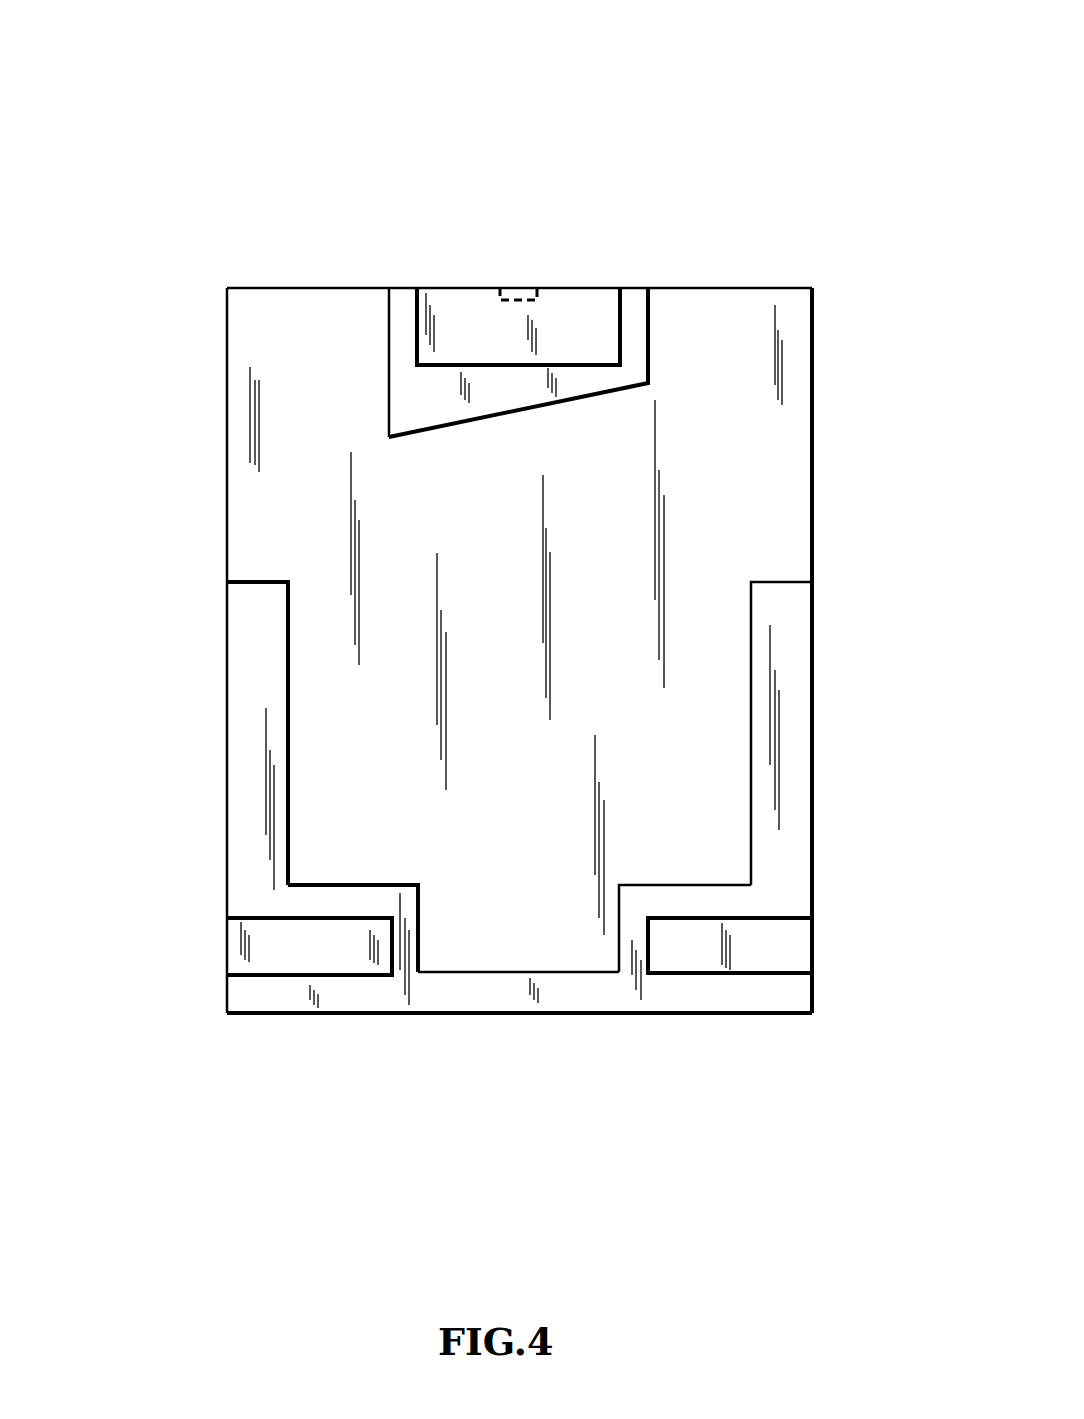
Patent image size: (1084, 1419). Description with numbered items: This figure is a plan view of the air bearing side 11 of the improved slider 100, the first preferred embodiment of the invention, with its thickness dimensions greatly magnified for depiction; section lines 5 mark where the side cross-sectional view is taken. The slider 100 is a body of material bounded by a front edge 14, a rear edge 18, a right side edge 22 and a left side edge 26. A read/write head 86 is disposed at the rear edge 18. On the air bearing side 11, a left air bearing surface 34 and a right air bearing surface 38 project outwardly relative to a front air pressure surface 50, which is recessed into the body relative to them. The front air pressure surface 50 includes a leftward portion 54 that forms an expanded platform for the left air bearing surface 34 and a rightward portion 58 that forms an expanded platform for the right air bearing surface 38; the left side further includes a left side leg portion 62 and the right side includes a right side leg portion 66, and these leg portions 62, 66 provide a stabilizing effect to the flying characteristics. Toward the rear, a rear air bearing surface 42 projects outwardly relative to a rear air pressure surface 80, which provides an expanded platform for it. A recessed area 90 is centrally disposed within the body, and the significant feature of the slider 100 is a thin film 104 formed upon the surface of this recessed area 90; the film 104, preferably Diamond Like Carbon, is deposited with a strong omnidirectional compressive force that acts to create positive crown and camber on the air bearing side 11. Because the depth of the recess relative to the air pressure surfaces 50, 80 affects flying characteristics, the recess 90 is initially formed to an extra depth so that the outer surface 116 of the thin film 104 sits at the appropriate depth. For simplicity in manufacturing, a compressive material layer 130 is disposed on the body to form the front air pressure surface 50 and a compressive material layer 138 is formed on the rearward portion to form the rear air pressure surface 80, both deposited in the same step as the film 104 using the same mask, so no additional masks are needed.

The slider 100 is at (684, 60).
The section lines 5- 5 is at (518, 263).
The air bearing side 11 is at (256, 368).
The front edge 14 is at (345, 1013).
The rear edge 18 is at (752, 288).
The right side edge 22 is at (813, 526).
The left side edge 26 is at (227, 452).
The left air bearing surface 34 is at (240, 943).
The right air bearing surface 38 is at (802, 945).
The rear air bearing surface 42 is at (578, 300).
The front air pressure surface 50 is at (560, 1013).
The leftward portion of the air pressure surface 54 is at (360, 893).
The rightward portion of the air pressure surface 58 is at (640, 895).
The left side leg portion 62 is at (240, 662).
The right side leg portion 66 is at (806, 727).
The rear air pressure surface 80 is at (420, 395).
The read/write head 86 is at (526, 287).
The recessed area 90 is at (713, 488).
The thin film 104 is at (685, 665).
The outer surface of the thin film layer 116 is at (536, 776).
The compressive material layer 130 is at (227, 738).
The compressive material layer 138 is at (522, 418).